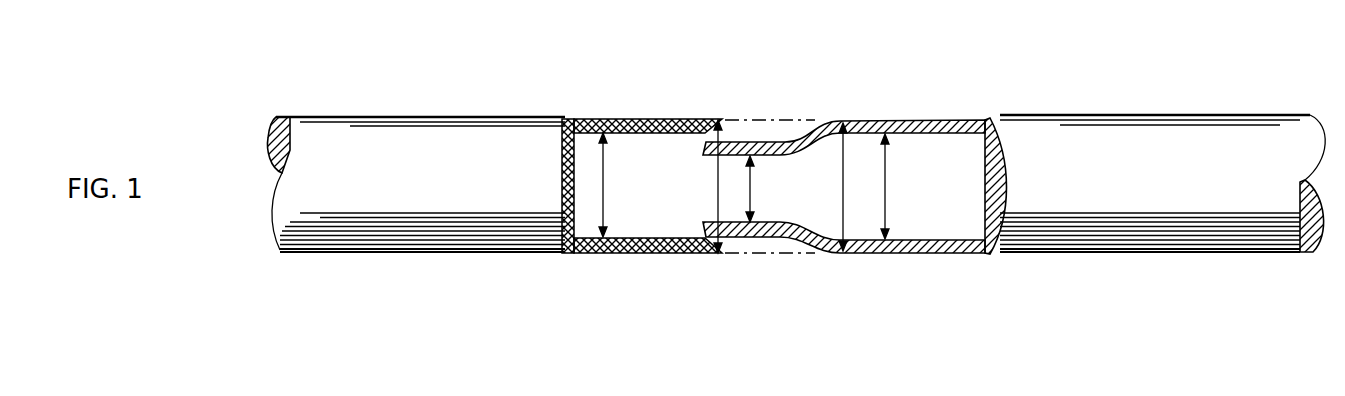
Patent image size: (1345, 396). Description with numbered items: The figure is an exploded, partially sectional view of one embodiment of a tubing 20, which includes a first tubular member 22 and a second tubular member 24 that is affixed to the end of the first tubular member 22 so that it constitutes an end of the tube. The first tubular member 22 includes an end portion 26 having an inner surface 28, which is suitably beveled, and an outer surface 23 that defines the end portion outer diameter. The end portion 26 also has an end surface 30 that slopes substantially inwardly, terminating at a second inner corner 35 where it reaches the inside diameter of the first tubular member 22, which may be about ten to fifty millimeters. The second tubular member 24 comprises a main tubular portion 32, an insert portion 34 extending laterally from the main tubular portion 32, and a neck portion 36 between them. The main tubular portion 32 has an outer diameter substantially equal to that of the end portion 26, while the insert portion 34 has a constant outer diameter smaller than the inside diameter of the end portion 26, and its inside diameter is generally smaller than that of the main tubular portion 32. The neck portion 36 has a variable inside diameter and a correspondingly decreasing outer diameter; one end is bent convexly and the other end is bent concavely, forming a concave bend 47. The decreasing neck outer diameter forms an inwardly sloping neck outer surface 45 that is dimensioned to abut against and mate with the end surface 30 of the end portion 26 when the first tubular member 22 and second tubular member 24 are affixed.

The tubing 20 is at (1095, 73).
The first tubular member 22 is at (588, 118).
The outer surface 23 is at (700, 119).
The second tubular member 24 is at (930, 120).
The end portion 26 is at (640, 118).
The inner surface 28 is at (615, 118).
The end surface 30 is at (718, 120).
The main tubular portion 32 is at (955, 253).
The insert portion 34 is at (760, 232).
The second inner corner 35 is at (718, 124).
The neck portion 36 is at (818, 252).
The neck outer surface 45 is at (822, 130).
The concave bend 47 is at (792, 126).